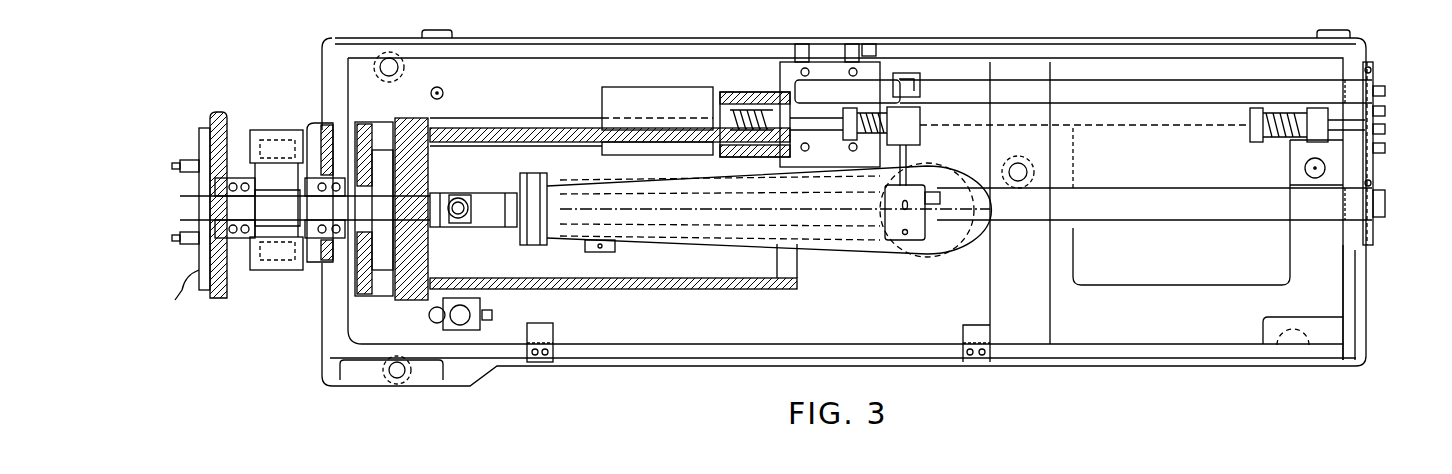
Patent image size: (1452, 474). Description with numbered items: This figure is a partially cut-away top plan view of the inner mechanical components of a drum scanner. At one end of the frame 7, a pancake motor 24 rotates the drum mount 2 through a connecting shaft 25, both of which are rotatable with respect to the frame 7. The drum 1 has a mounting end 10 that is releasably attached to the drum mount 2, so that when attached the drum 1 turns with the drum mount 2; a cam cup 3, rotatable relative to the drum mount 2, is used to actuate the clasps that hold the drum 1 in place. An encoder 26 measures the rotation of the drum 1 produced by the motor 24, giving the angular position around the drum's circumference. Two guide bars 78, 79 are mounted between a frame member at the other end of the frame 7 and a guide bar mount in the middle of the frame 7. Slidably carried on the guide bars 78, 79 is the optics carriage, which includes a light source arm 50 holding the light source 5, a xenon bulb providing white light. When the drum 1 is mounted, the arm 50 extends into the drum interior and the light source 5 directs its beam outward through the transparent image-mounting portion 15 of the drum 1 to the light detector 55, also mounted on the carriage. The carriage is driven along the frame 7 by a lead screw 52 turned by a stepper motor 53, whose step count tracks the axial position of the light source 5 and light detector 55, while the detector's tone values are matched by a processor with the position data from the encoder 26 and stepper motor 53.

The drum 1 is at (558, 116).
The drum mount 2 is at (393, 303).
The cam cup 3 is at (357, 293).
The light source 5 is at (463, 190).
The frame 7 is at (1389, 287).
The mounting end 10 is at (413, 282).
The transparent image-mounting portion 15 is at (664, 292).
The pancake motor 24 is at (200, 112).
The shaft 25 is at (327, 127).
The encoder 26 is at (262, 265).
The light source arm 50 is at (674, 183).
The lead screw 52 is at (941, 120).
The stepper motor 53 is at (684, 87).
The light detector 55 is at (454, 192).
The guide bar 78 is at (1170, 192).
The guide bar 79 is at (1104, 84).